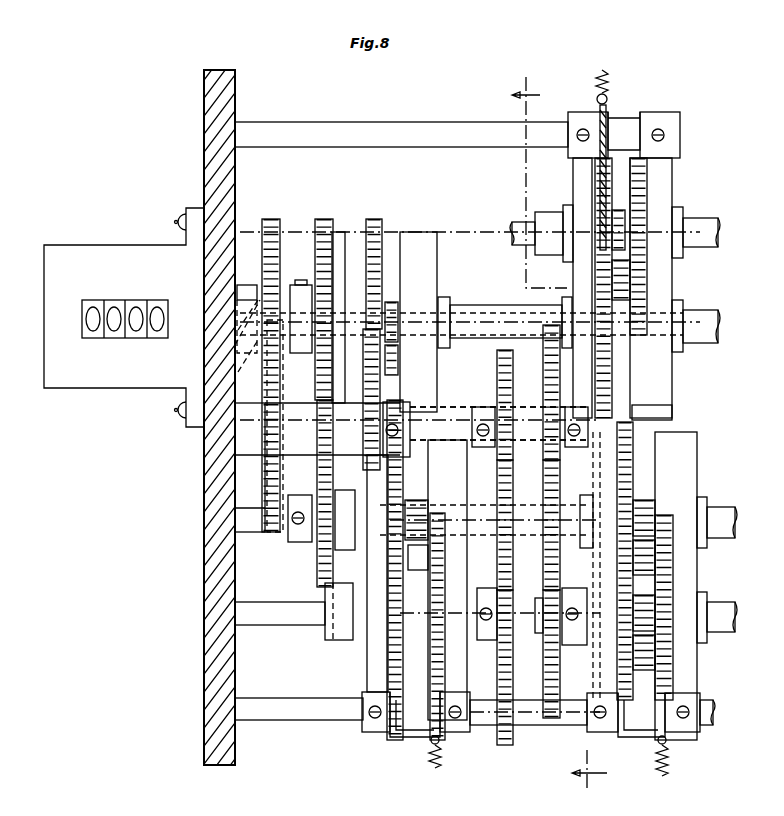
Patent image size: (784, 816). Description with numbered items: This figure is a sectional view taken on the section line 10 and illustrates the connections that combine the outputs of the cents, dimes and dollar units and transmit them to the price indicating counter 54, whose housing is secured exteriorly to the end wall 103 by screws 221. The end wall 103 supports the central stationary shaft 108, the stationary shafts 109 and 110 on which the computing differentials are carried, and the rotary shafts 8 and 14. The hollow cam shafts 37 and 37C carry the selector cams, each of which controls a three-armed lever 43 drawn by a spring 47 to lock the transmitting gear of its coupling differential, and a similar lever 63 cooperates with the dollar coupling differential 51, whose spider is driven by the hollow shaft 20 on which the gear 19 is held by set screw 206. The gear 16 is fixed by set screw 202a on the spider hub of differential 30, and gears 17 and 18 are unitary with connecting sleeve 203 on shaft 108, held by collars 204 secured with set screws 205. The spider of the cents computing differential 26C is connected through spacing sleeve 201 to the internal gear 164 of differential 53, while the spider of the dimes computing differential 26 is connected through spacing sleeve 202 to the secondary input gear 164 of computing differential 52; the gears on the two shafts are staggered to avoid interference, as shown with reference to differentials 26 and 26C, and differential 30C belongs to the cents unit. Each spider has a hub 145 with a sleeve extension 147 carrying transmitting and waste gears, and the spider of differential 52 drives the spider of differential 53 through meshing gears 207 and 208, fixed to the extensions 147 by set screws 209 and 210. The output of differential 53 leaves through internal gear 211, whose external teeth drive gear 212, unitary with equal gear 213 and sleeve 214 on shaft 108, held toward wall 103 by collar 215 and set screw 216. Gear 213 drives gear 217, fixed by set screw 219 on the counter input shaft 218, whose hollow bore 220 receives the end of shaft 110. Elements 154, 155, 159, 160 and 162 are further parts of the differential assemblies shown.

The rotary shaft 8 is at (272, 625).
The section line 10 is at (562, 436).
The rotary shaft 14 is at (712, 232).
The gear 16 is at (546, 662).
The gear 17 is at (545, 482).
The gear 18 is at (497, 486).
The gear 19 is at (497, 660).
The hollow shaft 20 is at (538, 598).
The dimes computing differential 26 is at (706, 464).
The cents computing differential 26C is at (684, 377).
The differential 30 is at (733, 576).
The differential 30C is at (684, 180).
The hollow shaft 37 is at (304, 720).
The hollow shaft 37C is at (412, 122).
The three-armed lever 43 is at (638, 106).
The spring 47 is at (602, 68).
The coupling differential 51 is at (362, 664).
The computing differential 52 is at (470, 472).
The differential 53 is at (410, 230).
The price indicating counter 54 is at (96, 245).
The three-armed lever 63 is at (402, 742).
The end wall 103 is at (208, 508).
The central stationary shaft 108 is at (455, 422).
The stationary shaft 109 is at (722, 522).
The stationary shaft 110 is at (712, 316).
The hub 145 is at (600, 200).
The sleeve extension 147 is at (690, 210).
The gear 154 is at (440, 515).
The block 155 is at (363, 590).
The gear 159 is at (613, 225).
The gear 160 is at (630, 280).
The gear 162 is at (620, 484).
The internal gear 164 is at (437, 262).
The spacing sleeve 201 is at (494, 305).
The spacing sleeve 202 is at (578, 505).
The set screw 202a is at (592, 723).
The connecting sleeve 203 is at (548, 398).
The collar 204 is at (600, 395).
The set screw 205 is at (480, 424).
The set screw 206 is at (486, 600).
The gear 207 is at (318, 578).
The gear 208 is at (322, 219).
The set screw 209 is at (346, 550).
The set screw 210 is at (297, 285).
The internal gear 211 is at (374, 219).
The gear 212 is at (366, 330).
The gear 213 is at (268, 526).
The sleeve 214 is at (254, 448).
The collar 215 is at (392, 410).
The set screw 216 is at (398, 428).
The gear 217 is at (270, 219).
The input shaft 218 is at (240, 377).
The set screw 219 is at (248, 282).
The hollow bore 220 is at (238, 314).
The screw 221 is at (180, 218).